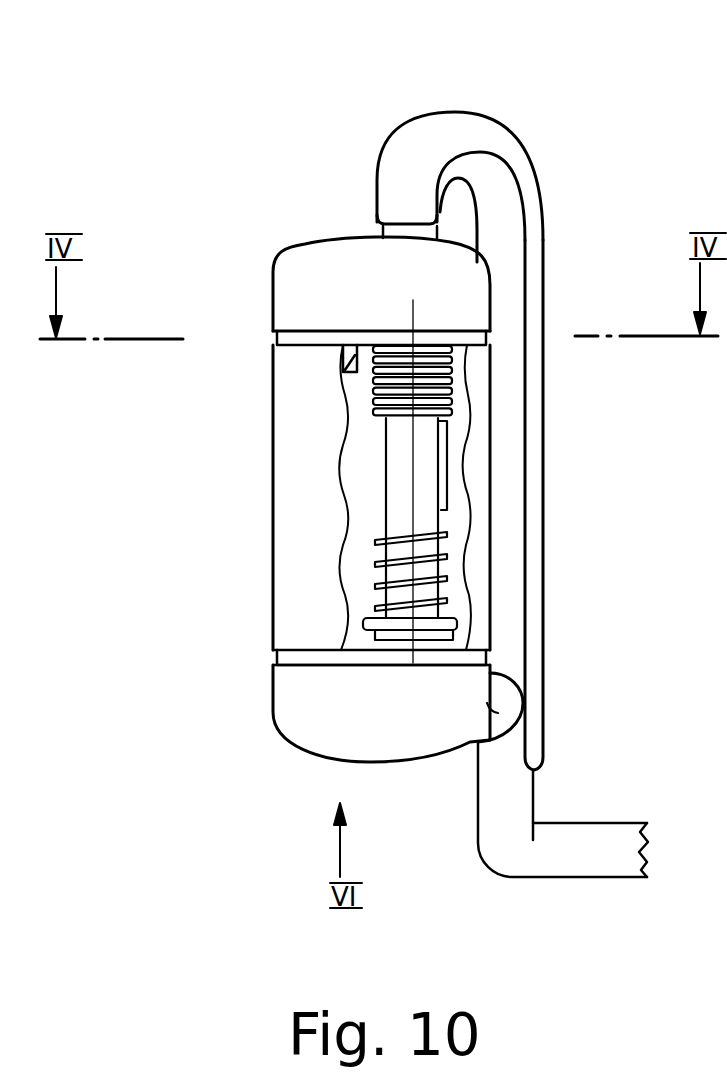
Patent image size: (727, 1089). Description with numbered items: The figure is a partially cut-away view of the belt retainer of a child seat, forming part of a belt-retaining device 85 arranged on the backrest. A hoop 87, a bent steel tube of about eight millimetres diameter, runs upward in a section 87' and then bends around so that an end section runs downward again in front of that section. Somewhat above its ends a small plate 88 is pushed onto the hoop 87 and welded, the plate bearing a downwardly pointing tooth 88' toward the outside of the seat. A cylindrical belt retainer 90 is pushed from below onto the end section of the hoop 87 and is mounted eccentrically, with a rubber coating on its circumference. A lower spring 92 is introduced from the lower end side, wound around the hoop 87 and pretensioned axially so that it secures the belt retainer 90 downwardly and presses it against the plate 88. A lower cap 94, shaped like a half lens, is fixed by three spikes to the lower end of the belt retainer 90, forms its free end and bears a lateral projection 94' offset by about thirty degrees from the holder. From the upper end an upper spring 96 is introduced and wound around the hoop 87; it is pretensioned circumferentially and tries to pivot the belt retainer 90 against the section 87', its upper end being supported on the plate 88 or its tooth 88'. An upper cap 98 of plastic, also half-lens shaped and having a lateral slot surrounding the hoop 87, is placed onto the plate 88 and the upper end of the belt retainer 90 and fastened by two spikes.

The belt-retaining device 85 is at (240, 612).
The hoop 87 is at (466, 138).
The section of the hoop 87' is at (593, 540).
The plate 88 is at (323, 445).
The tooth 88' is at (273, 414).
The belt retainer 90 is at (297, 407).
The lower spring 92 is at (445, 583).
The lower cap 94 is at (342, 755).
The projection 94' is at (536, 775).
The upper spring 96 is at (445, 387).
The upper cap 98 is at (313, 282).